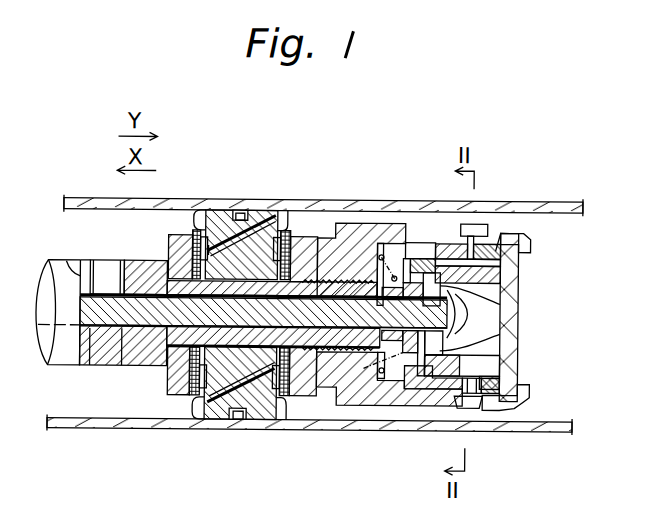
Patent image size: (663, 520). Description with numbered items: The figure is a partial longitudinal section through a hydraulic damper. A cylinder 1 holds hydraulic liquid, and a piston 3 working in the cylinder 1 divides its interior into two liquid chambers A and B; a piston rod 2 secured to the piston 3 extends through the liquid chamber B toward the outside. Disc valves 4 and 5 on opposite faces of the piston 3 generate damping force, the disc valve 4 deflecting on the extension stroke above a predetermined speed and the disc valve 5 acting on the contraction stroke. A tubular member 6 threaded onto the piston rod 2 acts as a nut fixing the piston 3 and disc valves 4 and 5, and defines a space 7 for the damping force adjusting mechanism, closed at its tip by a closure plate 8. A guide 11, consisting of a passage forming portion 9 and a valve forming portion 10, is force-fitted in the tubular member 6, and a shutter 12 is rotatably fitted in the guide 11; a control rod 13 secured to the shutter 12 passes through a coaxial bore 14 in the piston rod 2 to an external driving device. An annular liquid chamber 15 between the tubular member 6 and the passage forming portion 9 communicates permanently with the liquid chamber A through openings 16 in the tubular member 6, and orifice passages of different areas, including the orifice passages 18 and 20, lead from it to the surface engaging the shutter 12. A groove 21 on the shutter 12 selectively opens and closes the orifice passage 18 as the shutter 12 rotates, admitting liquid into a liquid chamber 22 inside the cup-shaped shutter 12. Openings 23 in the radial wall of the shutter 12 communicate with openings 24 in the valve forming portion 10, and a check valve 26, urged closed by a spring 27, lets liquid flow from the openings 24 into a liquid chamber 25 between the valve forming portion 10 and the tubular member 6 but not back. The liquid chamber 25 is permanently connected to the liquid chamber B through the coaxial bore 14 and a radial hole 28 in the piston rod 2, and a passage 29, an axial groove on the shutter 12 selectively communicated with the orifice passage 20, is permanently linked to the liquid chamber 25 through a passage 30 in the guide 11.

The cylinder 1 is at (137, 424).
The piston rod 2 is at (67, 270).
The piston 3 is at (218, 420).
The disc valve 4 is at (283, 404).
The disc valve 5 is at (204, 211).
The tubular member 6 is at (297, 218).
The space 7 is at (437, 240).
The closure plate 8 is at (533, 234).
The passage forming portion 9 is at (518, 230).
The valve forming portion 10 is at (410, 367).
The guide 11 is at (436, 398).
The shutter 12 is at (518, 289).
The control rod 13 is at (108, 318).
The coaxial bore 14 is at (148, 330).
The annular liquid chamber 15 is at (477, 412).
The openings 16 is at (474, 223).
The orifice passage 18 is at (530, 392).
The orifice passage 20 is at (492, 235).
The groove 21 is at (488, 370).
The liquid chamber 22 is at (490, 328).
The openings 23 is at (518, 305).
The openings 24 is at (413, 242).
The liquid chamber 25 is at (332, 420).
The check valve 26 is at (378, 388).
The spring 27 is at (321, 250).
The radial hole 28 is at (108, 274).
The passage 29 is at (518, 273).
The passage 30 is at (386, 243).
The liquid chamber A is at (528, 418).
The liquid chamber B is at (75, 392).